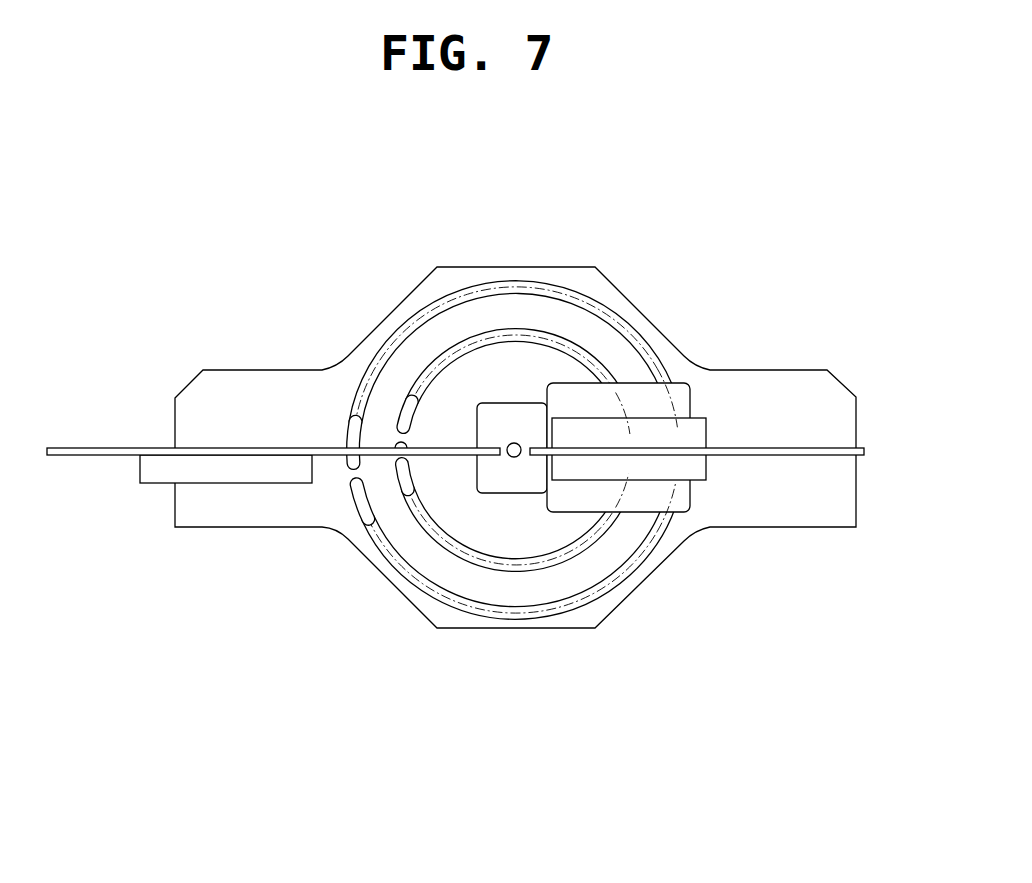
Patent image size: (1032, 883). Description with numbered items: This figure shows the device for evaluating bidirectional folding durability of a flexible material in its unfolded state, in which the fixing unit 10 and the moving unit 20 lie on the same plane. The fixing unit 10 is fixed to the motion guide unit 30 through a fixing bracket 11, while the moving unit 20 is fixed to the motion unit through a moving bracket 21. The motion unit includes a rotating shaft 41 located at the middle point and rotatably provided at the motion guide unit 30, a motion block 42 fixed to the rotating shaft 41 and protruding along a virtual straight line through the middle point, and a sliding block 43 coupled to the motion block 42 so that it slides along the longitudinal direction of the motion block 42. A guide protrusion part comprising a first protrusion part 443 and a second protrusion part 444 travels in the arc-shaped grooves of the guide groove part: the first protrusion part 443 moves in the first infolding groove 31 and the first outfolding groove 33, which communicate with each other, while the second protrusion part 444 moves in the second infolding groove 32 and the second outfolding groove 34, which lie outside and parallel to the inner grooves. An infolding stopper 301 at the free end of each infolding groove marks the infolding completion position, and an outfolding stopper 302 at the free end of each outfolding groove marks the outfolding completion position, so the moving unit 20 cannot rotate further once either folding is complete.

The fixing unit 10 is at (107, 440).
The fixing bracket 11 is at (228, 468).
The moving unit 20 is at (822, 442).
The moving bracket 21 is at (707, 463).
The motion guide unit 30 is at (798, 364).
The infolding stopper 301 is at (360, 452).
The outfolding stopper 302 is at (400, 462).
The first infolding groove 31 is at (522, 335).
The second infolding groove 32 is at (478, 295).
The first outfolding groove 33 is at (540, 562).
The second outfolding groove 34 is at (579, 612).
The rotating shaft 41 is at (550, 402).
The motion block 42 is at (520, 441).
The sliding block 43 is at (692, 400).
The first protrusion part 443 is at (628, 470).
The second protrusion part 444 is at (692, 468).